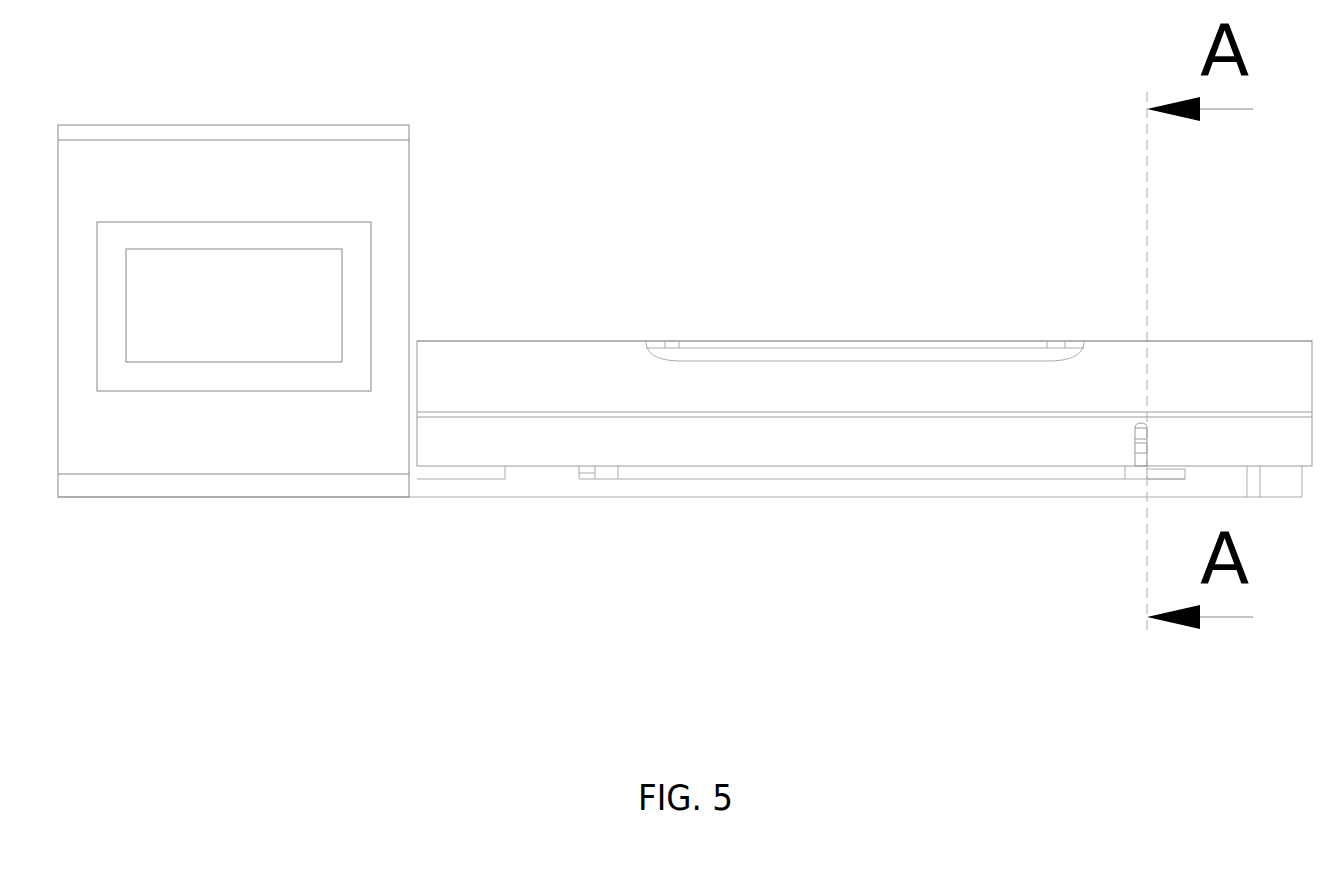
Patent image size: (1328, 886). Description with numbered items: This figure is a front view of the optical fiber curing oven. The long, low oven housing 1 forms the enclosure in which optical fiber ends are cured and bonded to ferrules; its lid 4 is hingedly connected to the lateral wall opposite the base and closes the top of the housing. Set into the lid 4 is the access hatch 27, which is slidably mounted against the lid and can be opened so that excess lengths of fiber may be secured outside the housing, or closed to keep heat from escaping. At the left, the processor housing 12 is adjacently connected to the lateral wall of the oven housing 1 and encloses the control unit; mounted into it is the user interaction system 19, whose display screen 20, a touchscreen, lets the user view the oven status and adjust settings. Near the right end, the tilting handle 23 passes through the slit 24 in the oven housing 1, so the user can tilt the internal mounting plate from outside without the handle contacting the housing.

The oven housing 1 is at (1196, 319).
The lid 4 is at (556, 342).
The processor housing 12 is at (404, 223).
The user interaction system 19 is at (235, 211).
The display screen 20 is at (152, 389).
The tilting handle 23 is at (1135, 454).
The slit 24 is at (1138, 411).
The access hatch 27 is at (898, 357).